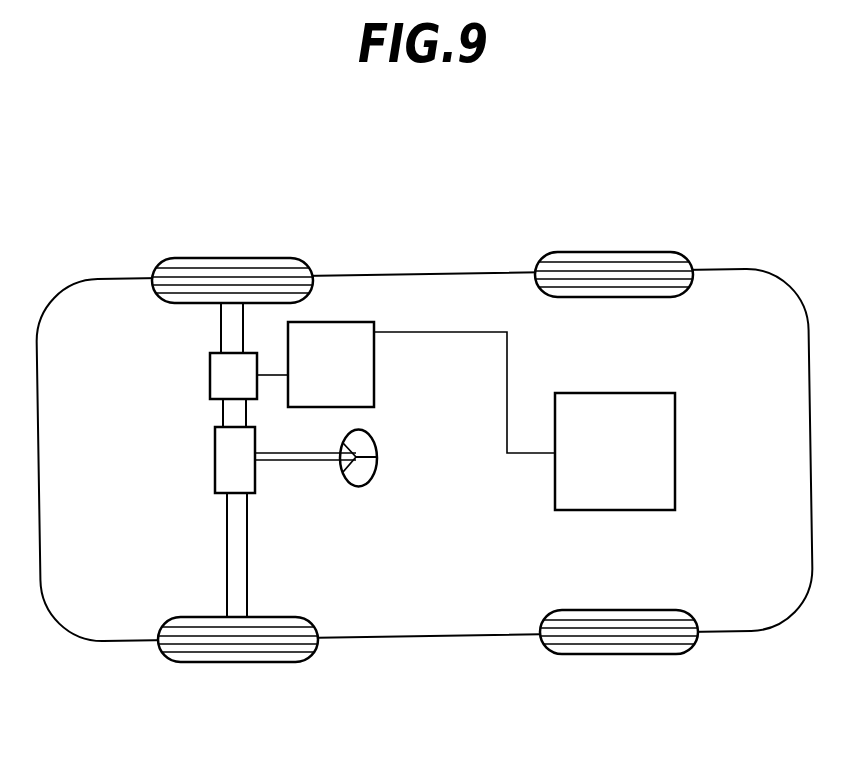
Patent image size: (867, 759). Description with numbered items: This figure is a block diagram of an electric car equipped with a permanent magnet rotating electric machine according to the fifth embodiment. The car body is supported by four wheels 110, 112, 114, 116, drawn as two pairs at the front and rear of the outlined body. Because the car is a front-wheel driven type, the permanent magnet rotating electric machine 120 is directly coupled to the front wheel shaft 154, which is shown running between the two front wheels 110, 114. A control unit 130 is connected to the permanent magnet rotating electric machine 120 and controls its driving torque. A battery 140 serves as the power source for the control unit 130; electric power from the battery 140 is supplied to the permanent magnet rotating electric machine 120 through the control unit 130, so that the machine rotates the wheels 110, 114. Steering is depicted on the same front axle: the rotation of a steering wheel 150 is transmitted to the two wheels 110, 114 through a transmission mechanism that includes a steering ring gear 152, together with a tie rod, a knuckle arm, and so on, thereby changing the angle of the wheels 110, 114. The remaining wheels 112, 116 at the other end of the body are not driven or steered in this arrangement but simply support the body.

The wheel 110 is at (232, 257).
The wheel 112 is at (611, 251).
The wheel 114 is at (241, 664).
The wheel 116 is at (620, 655).
The permanent magnet rotating electric machine 120 is at (208, 375).
The control unit 130 is at (375, 379).
The battery 140 is at (677, 447).
The steering wheel 150 is at (376, 466).
The steering ring gear 152 is at (213, 467).
The front wheel shaft 154 is at (220, 414).